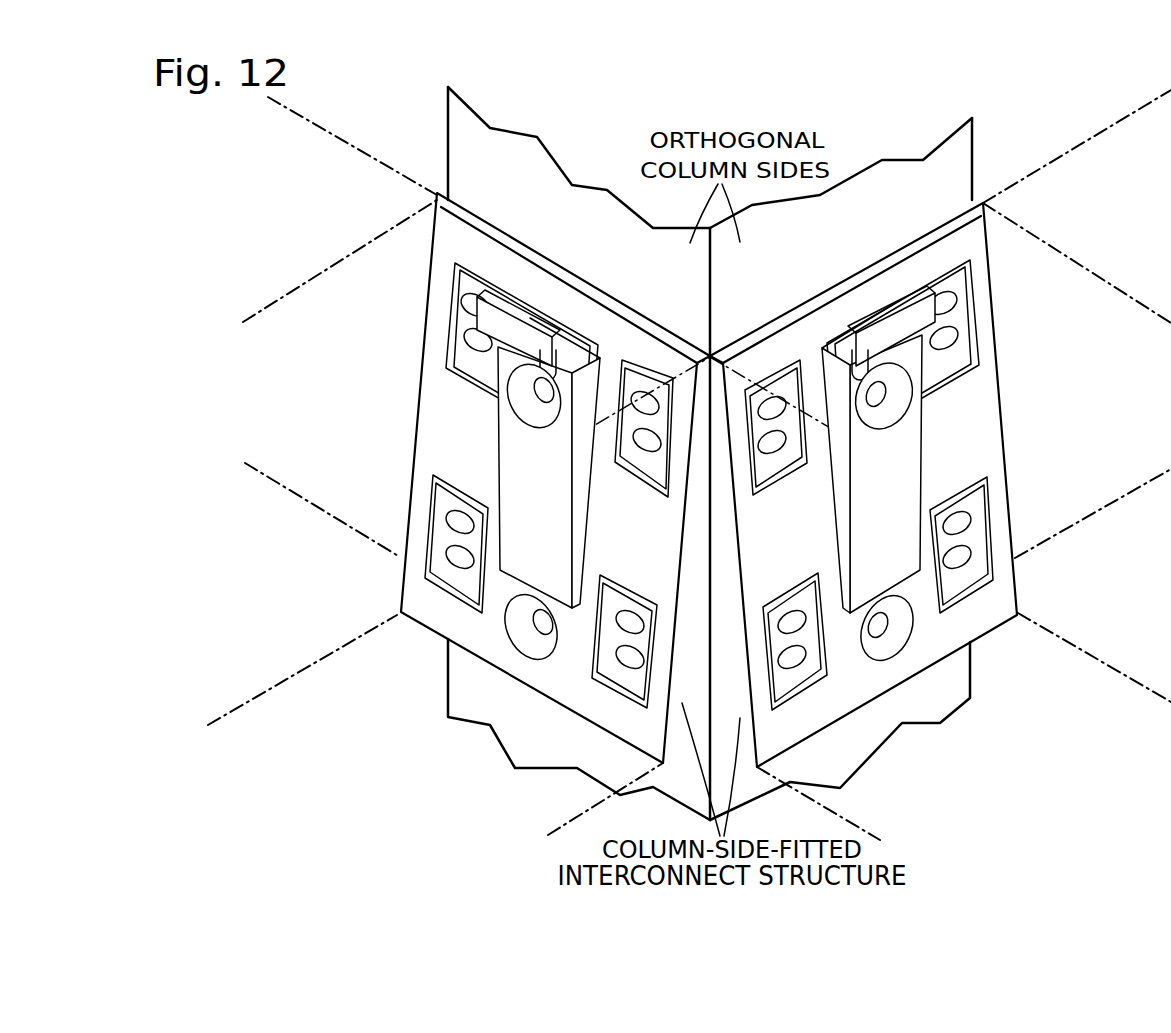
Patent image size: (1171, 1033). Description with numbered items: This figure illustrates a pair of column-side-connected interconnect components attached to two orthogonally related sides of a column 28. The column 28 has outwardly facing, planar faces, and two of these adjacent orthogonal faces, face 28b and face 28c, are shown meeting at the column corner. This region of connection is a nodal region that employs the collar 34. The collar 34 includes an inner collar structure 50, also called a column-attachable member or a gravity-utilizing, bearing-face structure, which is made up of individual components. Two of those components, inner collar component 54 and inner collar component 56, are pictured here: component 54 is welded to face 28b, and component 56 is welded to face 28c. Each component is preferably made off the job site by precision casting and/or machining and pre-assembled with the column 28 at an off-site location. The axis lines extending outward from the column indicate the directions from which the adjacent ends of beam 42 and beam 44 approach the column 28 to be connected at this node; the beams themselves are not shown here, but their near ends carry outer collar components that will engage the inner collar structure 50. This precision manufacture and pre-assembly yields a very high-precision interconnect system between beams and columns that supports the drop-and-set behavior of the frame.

The column 28 is at (715, 444).
The planar face 28b is at (468, 153).
The planar face 28c is at (966, 148).
The collar 34 is at (766, 308).
The beam 42 is at (351, 254).
The beam 44 is at (1068, 256).
The inner collar structure 50 is at (671, 472).
The inner collar component 54 is at (500, 240).
The inner collar component 56 is at (868, 272).